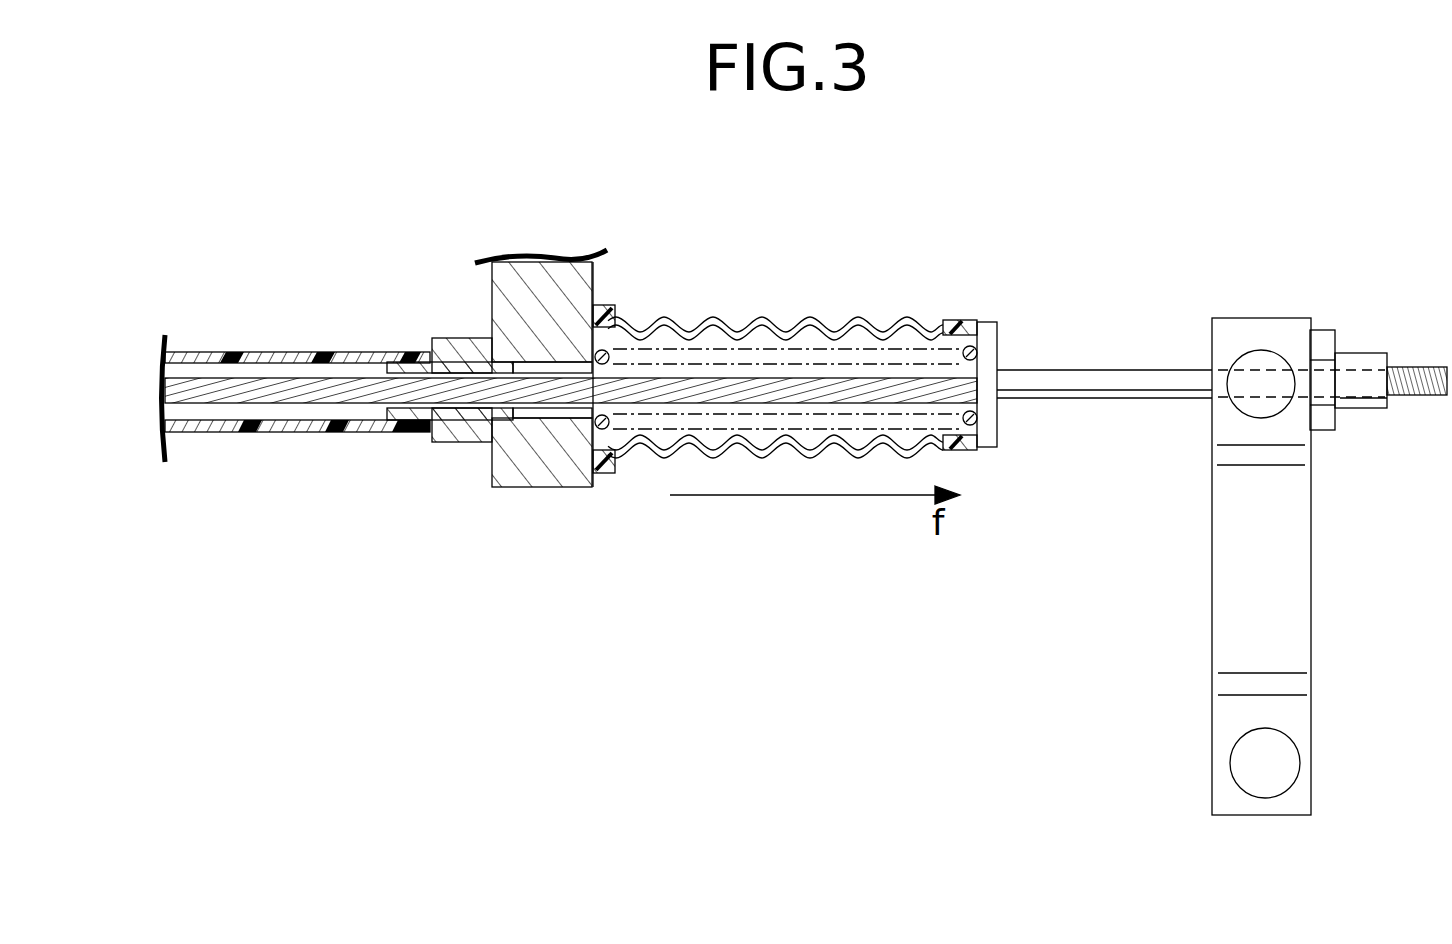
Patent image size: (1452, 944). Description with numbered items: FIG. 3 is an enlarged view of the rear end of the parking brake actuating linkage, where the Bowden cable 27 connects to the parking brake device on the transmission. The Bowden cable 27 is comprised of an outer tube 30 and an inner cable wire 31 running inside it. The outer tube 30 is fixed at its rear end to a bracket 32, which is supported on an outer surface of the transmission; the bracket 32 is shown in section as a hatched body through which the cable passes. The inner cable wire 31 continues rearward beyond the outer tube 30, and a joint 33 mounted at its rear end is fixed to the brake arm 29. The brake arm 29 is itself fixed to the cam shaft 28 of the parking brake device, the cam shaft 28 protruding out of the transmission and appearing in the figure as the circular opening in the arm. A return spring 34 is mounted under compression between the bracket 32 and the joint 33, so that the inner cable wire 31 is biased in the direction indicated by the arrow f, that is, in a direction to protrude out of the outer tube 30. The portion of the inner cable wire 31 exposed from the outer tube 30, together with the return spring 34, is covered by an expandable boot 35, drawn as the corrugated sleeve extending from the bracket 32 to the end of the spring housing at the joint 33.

The Bowden cable 27 is at (352, 235).
The cam shaft 28 is at (1273, 760).
The brake arm 29 is at (1240, 548).
The outer tube 30 is at (188, 354).
The inner cable wire 31 is at (313, 393).
The bracket 32 is at (547, 273).
The joint 33 is at (1075, 375).
The return spring 34 is at (604, 352).
The expandable boot 35 is at (773, 320).